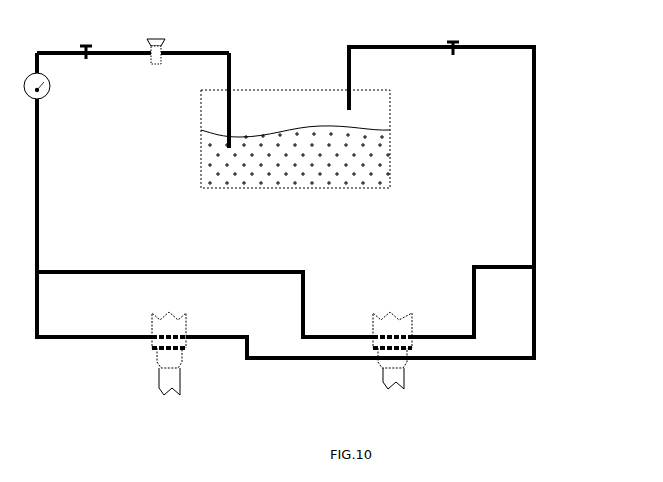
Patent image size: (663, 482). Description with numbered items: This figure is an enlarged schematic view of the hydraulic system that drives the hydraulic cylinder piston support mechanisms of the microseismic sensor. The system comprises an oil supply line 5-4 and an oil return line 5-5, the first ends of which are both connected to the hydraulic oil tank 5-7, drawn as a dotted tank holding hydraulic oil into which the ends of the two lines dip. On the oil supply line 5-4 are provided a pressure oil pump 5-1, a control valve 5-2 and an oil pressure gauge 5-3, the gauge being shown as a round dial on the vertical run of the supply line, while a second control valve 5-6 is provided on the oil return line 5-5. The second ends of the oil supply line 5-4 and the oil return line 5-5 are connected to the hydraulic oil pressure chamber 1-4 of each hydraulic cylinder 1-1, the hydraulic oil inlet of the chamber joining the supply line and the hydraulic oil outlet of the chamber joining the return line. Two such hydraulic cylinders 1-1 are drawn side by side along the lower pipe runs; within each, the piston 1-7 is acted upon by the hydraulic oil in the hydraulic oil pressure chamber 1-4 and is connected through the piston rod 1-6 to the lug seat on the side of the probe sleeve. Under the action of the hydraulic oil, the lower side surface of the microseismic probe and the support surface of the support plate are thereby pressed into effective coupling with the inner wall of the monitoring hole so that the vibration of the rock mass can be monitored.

The pressure oil pump 5-1 is at (163, 40).
The control valve 5-2 is at (91, 43).
The oil pressure gauge 5-3 is at (49, 88).
The oil supply line 5-4 is at (40, 216).
The oil return line 5-5 is at (535, 216).
The control valve 5-6 is at (458, 44).
The hydraulic oil tank 5-7 is at (377, 147).
The hydraulic cylinder 1-1 is at (186, 358).
The hydraulic oil pressure chamber 1-4 is at (180, 337).
The piston 1-7 is at (155, 346).
The piston rod 1-6 is at (180, 368).